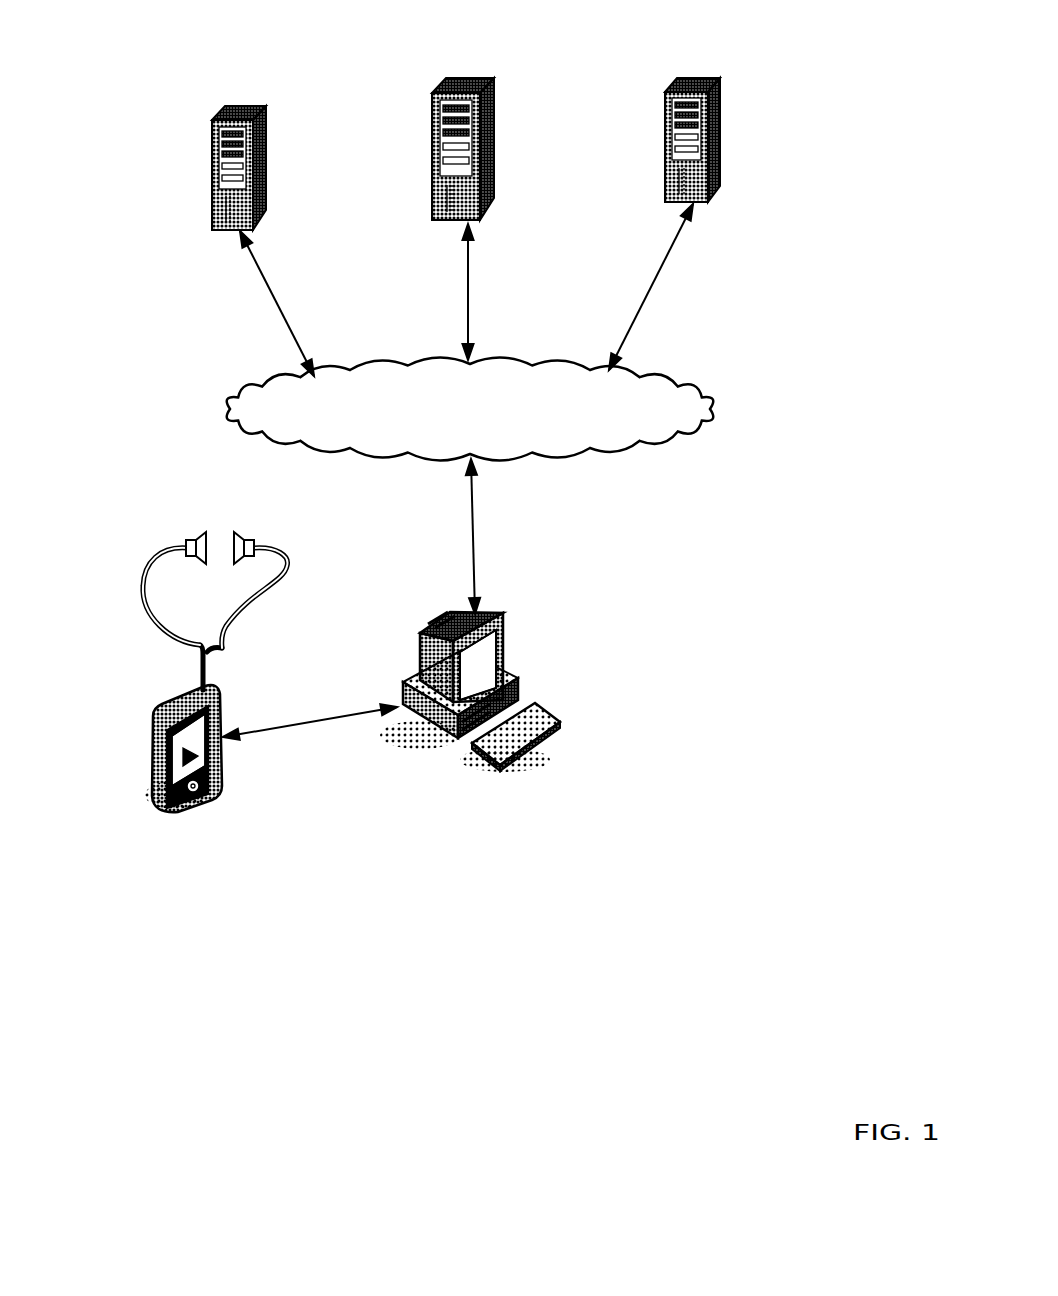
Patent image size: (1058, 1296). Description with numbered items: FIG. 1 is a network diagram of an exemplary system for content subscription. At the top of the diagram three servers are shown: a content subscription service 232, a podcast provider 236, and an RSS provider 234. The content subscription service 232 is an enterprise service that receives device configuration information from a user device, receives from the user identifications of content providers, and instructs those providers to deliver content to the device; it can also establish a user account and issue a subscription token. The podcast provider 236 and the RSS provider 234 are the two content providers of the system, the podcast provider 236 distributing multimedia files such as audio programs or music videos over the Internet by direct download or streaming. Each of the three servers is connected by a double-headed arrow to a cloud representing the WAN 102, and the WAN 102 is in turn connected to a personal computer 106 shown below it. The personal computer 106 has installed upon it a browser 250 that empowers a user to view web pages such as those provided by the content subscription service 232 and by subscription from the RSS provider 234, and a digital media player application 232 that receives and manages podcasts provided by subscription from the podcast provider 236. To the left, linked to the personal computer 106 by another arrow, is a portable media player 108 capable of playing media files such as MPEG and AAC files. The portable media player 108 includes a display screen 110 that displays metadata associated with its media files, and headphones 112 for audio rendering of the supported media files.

The content subscription service 232 is at (665, 711).
The podcast provider 236 is at (532, 62).
The RSS provider 234 is at (787, 62).
The WAN 102 is at (515, 421).
The headphones 112 is at (212, 521).
The display screen 110 is at (201, 743).
The portable media player 108 is at (310, 866).
The personal computer 106 is at (407, 647).
The browser 250 is at (440, 740).